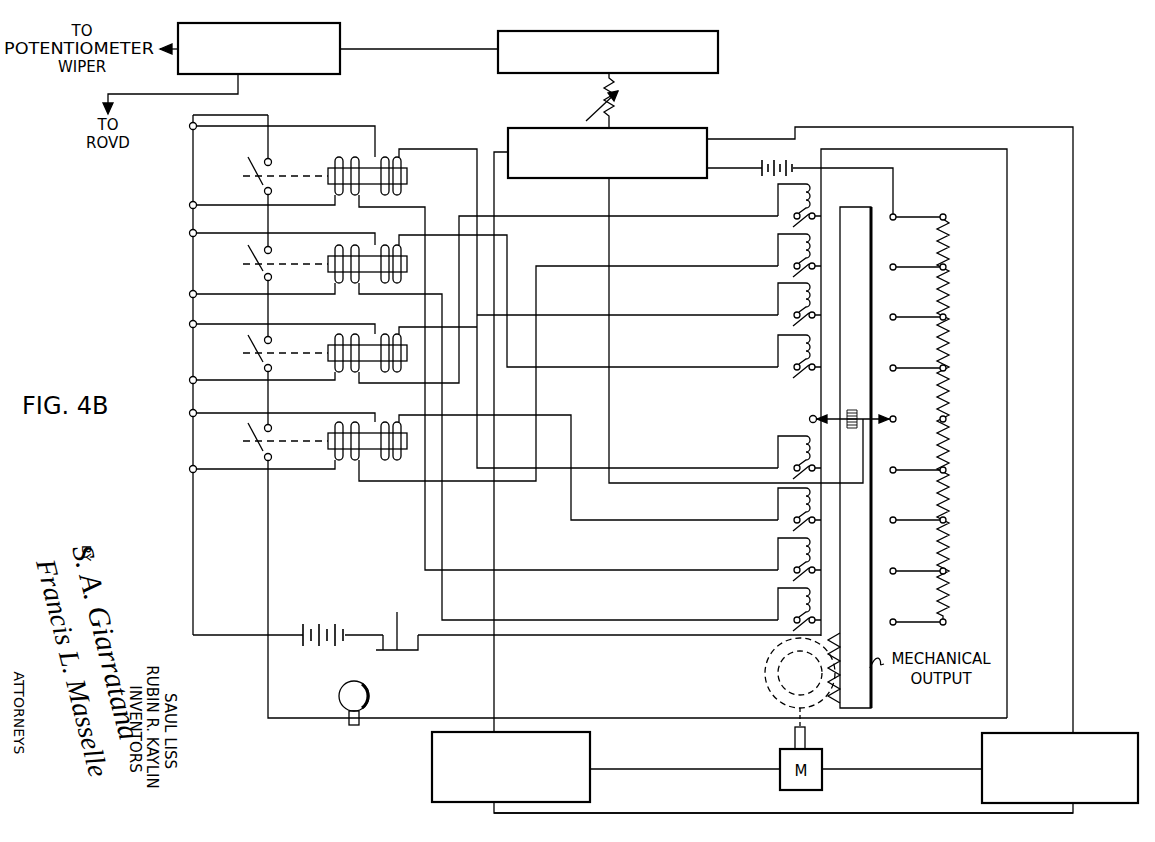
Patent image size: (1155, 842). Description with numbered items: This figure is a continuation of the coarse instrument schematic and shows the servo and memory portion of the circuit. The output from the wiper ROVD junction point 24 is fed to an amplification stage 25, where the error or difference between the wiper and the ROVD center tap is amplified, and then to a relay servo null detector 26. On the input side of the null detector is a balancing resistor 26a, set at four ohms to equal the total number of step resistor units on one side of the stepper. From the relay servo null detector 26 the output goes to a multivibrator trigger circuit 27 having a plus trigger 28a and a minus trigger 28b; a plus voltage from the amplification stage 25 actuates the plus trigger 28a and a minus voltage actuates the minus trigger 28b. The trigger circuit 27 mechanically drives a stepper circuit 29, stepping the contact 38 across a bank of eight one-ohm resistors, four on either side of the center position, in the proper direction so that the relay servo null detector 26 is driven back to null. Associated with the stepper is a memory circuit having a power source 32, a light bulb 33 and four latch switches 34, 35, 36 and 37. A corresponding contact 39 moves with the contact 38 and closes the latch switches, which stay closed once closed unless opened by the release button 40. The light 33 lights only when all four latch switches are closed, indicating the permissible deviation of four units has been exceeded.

The junction point 24 is at (341, 62).
The amplification stage 25 is at (718, 50).
The relay servo null detector 26 is at (707, 128).
The balancing resistor 26a is at (601, 100).
The multivibrator trigger circuit 27 is at (712, 813).
The plus trigger 28a is at (982, 780).
The minus trigger 28b is at (590, 778).
The stepper circuit 29 is at (943, 217).
The power source 32 is at (330, 624).
The light bulb 33 is at (368, 688).
The latch switch 34 is at (336, 253).
The latch switch 35 is at (341, 163).
The latch switch 36 is at (338, 344).
The latch switch 37 is at (338, 433).
The stepper circuit contact 38 is at (882, 425).
The contact 39 is at (822, 416).
The release button 40 is at (397, 612).